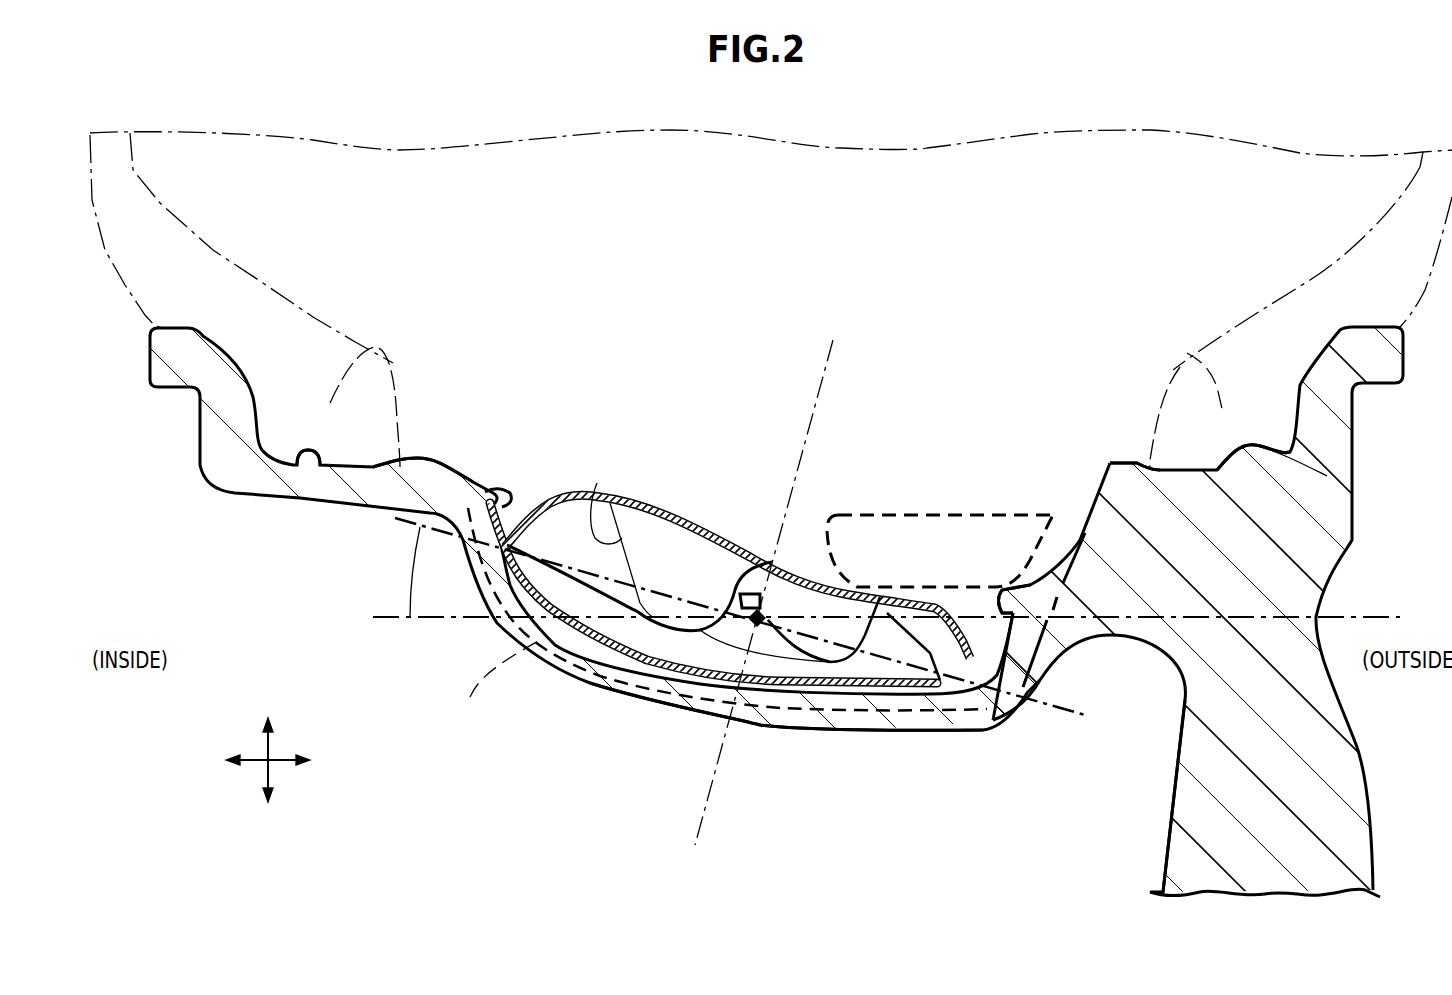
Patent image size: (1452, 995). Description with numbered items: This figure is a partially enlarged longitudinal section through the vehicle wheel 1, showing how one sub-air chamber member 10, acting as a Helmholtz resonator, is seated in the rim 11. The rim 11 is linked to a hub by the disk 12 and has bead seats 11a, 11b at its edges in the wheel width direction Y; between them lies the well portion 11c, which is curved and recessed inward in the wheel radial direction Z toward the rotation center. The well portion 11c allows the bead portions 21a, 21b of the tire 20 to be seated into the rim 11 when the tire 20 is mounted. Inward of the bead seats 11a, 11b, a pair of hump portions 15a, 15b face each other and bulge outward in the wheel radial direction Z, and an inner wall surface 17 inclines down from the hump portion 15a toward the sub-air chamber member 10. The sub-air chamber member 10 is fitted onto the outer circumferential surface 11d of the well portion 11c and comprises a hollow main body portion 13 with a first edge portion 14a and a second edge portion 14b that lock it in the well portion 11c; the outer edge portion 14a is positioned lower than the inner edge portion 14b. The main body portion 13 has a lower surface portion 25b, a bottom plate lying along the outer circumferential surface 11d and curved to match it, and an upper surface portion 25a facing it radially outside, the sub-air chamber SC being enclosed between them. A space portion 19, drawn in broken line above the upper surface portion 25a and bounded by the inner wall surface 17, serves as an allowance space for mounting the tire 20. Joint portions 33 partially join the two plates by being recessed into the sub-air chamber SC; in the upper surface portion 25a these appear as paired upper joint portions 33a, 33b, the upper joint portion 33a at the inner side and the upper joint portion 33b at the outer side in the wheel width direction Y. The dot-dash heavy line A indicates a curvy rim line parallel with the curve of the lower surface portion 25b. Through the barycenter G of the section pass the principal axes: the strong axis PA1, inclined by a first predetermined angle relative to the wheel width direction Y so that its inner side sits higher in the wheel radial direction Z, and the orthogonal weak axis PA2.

The vehicle wheel 1 is at (1378, 435).
The sub-air chamber member 10 is at (720, 603).
The rim 11 is at (200, 440).
The bead seat 11a is at (1327, 476).
The bead seat 11b is at (305, 498).
The well portion 11c is at (918, 492).
The outer circumferential surface 11d is at (935, 692).
The disk 12 is at (1350, 785).
The main body portion 13 is at (688, 495).
The first edge portion 14a is at (1012, 598).
The second edge portion 14b is at (497, 492).
The hump portion 15a is at (1138, 460).
The hump portion 15b is at (430, 458).
The inner wall surface 17 is at (1075, 528).
The space portion 19 is at (922, 565).
The tire 20 is at (243, 277).
The bead portion 21a is at (1183, 353).
The bead portion 21b is at (378, 348).
The upper surface portion 25a is at (715, 543).
The lower surface portion 25b is at (613, 673).
The joint portion 33 is at (623, 660).
The upper joint portion 33a is at (597, 483).
The upper joint portion 33b is at (780, 600).
The curvy rim line A is at (500, 681).
The barycenter G is at (762, 614).
The sub-air chamber SC is at (730, 637).
The strong axis PA1 is at (1085, 716).
The weak axis PA2 is at (825, 363).
The wheel width direction Y is at (1378, 617).
The wheel radial direction Z is at (278, 745).